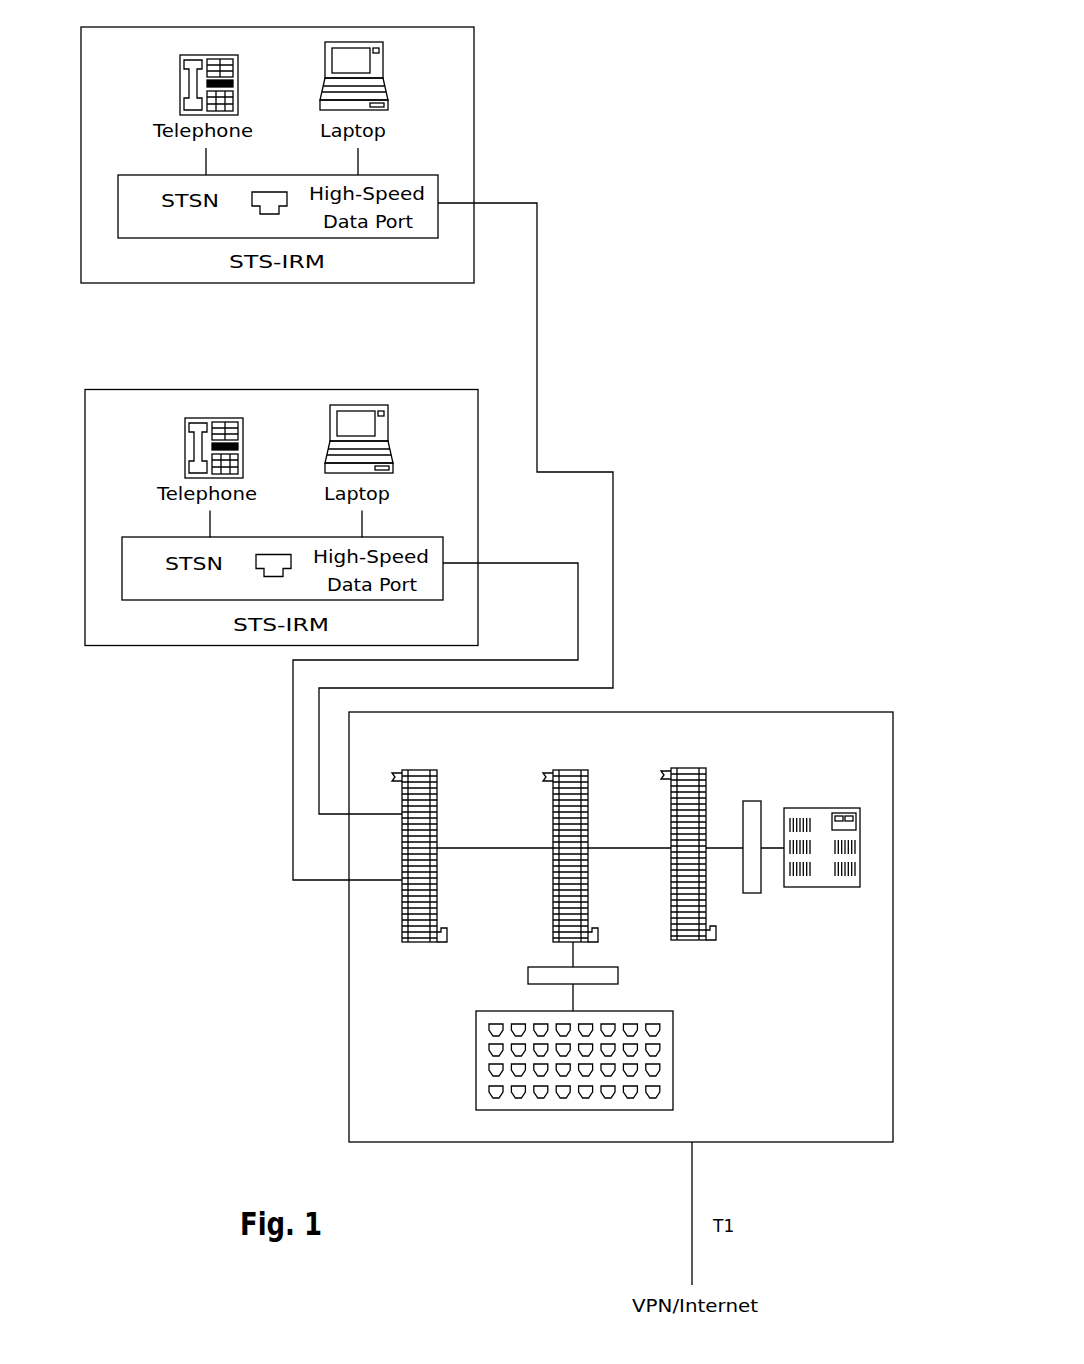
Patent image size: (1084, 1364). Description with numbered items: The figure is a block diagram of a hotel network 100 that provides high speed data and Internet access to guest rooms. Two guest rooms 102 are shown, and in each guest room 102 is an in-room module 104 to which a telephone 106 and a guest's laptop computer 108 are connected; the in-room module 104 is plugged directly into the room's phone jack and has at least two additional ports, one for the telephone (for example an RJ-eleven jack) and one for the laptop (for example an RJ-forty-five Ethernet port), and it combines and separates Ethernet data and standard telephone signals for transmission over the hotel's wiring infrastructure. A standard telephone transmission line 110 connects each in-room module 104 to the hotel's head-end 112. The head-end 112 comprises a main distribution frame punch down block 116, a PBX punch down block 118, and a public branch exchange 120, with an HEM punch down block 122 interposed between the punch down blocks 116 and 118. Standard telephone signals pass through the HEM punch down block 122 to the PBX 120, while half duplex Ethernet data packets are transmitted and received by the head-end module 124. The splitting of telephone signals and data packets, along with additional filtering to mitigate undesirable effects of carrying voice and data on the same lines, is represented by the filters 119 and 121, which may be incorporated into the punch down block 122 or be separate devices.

The hotel network 100 is at (646, 128).
The guest room 102 is at (474, 45).
The in-room module 104 is at (146, 175).
The telephone 106 is at (179, 90).
The laptop computer 108 is at (384, 66).
The transmission line 110 is at (584, 474).
The head-end 112 is at (349, 1022).
The main distribution frame punch down block 116 is at (437, 778).
The PBX punch down block 118 is at (706, 778).
The filter 119 is at (752, 893).
The public branch exchange 120 is at (861, 847).
The filter 121 is at (528, 982).
The HEM punch down block 122 is at (589, 875).
The head-end module 124 is at (673, 1022).